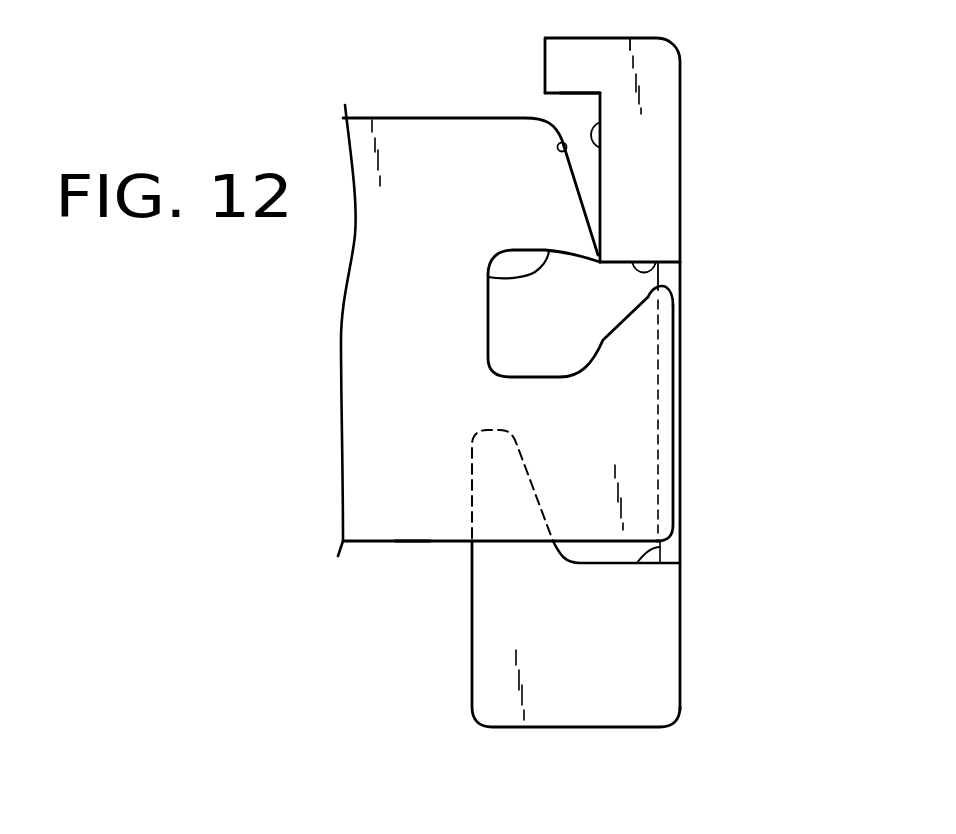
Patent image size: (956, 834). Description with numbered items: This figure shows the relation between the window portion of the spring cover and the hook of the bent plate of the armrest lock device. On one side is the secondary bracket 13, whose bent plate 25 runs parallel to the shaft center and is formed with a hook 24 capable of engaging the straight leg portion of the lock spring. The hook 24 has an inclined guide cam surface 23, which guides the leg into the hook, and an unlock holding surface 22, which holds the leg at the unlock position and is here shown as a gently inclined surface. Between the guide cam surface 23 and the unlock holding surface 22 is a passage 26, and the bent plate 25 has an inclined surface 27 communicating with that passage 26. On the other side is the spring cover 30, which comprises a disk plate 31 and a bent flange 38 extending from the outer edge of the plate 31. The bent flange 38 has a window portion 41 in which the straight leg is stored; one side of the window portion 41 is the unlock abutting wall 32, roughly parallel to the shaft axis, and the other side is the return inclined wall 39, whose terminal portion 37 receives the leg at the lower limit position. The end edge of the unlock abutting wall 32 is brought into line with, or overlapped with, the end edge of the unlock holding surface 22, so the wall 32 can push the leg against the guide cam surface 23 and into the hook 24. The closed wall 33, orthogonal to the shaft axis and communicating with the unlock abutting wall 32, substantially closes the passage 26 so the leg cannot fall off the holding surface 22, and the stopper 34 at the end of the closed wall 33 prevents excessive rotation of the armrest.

The secondary bracket 13 is at (466, 388).
The unlock holding surface 22 is at (487, 277).
The inclined guide cam surface 23 is at (603, 342).
The hook 24 is at (513, 325).
The bent plate 25 is at (413, 543).
The passage 26 is at (633, 280).
The inclined surface 27 is at (557, 148).
The spring cover 30 is at (621, 382).
The disk plate 31 is at (683, 181).
The unlock abutting wall 32 is at (660, 258).
The closed wall 33 is at (600, 148).
The stopper 34 is at (585, 94).
The terminal portion 37 is at (660, 547).
The bent flange 38 is at (620, 670).
The return inclined wall 39 is at (527, 468).
The window portion 41 is at (683, 445).